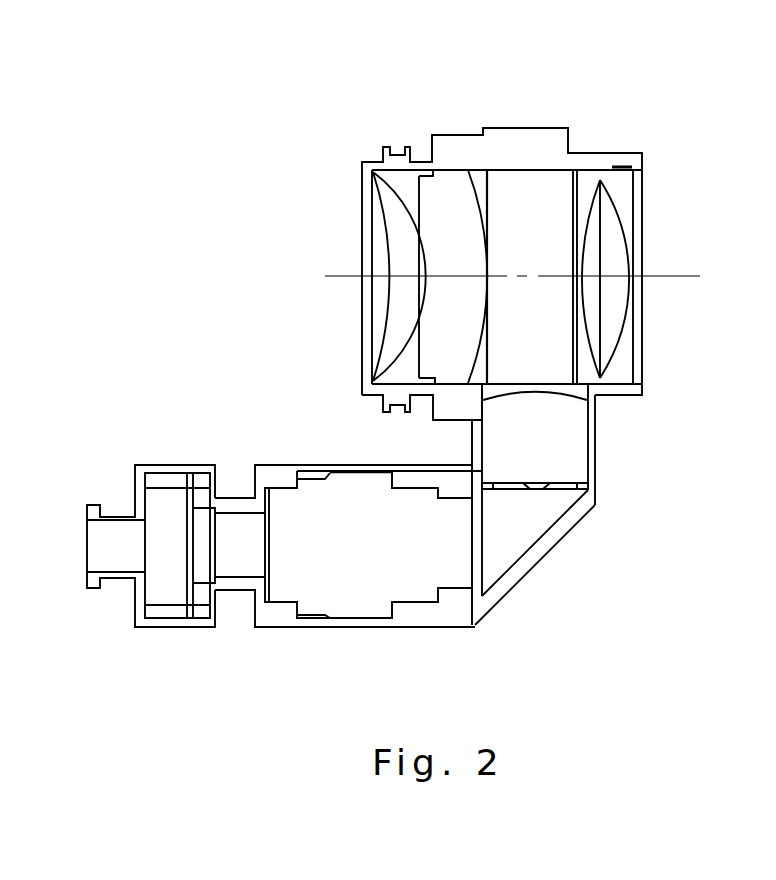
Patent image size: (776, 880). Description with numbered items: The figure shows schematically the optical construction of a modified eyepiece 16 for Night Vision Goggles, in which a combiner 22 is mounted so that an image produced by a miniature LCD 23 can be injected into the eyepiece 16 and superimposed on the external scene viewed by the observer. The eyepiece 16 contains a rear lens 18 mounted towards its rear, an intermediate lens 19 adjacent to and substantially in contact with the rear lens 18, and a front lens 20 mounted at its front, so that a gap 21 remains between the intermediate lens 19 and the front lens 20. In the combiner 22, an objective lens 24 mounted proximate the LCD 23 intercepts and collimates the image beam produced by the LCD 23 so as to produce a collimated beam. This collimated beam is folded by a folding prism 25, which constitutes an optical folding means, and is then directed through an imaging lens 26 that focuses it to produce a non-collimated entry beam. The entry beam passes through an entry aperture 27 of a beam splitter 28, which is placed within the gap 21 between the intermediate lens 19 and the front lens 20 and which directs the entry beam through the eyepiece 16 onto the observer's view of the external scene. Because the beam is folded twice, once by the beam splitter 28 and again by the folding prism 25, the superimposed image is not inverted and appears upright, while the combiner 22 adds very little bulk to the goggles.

The eyepiece 16 is at (352, 333).
The rear lens 18 is at (388, 251).
The intermediate lens 19 is at (448, 220).
The front lens 20 is at (615, 245).
The gap 21 is at (478, 178).
The combiner 22 is at (528, 584).
The miniature LCD 23 is at (162, 628).
The objective lens 24 is at (350, 628).
The folding prism 25 is at (525, 535).
The imaging lens 26 is at (575, 455).
The entry aperture 27 is at (548, 388).
The beam splitter 28 is at (547, 182).